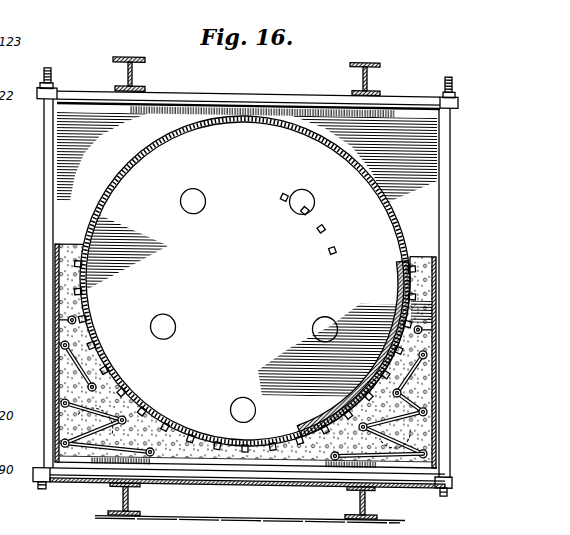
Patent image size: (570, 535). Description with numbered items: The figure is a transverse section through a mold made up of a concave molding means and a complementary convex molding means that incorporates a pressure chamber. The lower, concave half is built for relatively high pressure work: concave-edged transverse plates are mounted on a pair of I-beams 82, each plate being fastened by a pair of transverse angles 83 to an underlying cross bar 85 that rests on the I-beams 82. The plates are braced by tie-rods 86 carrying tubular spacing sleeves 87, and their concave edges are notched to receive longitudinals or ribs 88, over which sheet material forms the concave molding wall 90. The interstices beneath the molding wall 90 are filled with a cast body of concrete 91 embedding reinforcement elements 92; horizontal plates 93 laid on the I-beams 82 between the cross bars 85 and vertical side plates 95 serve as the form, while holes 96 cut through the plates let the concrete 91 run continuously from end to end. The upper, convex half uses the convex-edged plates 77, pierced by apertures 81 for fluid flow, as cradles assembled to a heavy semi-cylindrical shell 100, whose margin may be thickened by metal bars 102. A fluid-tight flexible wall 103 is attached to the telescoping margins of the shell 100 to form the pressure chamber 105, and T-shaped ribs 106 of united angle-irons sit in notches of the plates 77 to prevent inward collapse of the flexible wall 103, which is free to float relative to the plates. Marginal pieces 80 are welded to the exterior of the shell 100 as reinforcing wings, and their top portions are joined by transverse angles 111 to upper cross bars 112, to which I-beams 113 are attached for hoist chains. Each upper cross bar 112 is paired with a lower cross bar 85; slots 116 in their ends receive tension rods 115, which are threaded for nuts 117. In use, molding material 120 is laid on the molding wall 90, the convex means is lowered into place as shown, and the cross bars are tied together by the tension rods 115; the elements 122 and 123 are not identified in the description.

The convex-edged plate 77 is at (108, 216).
The marginal piece 80 is at (425, 150).
The apertures 81 is at (294, 210).
The I-beams 82 is at (123, 499).
The transverse angles 83 is at (62, 459).
The cross bar 85 is at (76, 473).
The tie-rods 86 is at (67, 326).
The tubular spacing sleeves 87 is at (69, 321).
The longitudinals or ribs 88 is at (270, 455).
The concave molding wall 90 is at (262, 449).
The body of concrete 91 is at (181, 453).
The reinforcement elements 92 is at (68, 365).
The horizontal plates 93 is at (153, 481).
The vertical side plates 95 is at (55, 266).
The holes 96 is at (382, 444).
The shell 100 is at (215, 118).
The metal bars 102 is at (403, 260).
The flexible wall 103 is at (137, 384).
The pressure chamber 105 is at (245, 268).
The longitudinals or ribs 106 is at (98, 320).
The transverse angles 111 is at (80, 115).
The upper cross bars 112 is at (249, 94).
The I-beams 113 is at (142, 60).
The tension rods 115 is at (44, 399).
The slots 116 is at (52, 87).
The nuts 117 is at (445, 86).
The molding material 120 is at (215, 443).
The member 122 is at (7, 96).
The member 123 is at (10, 42).